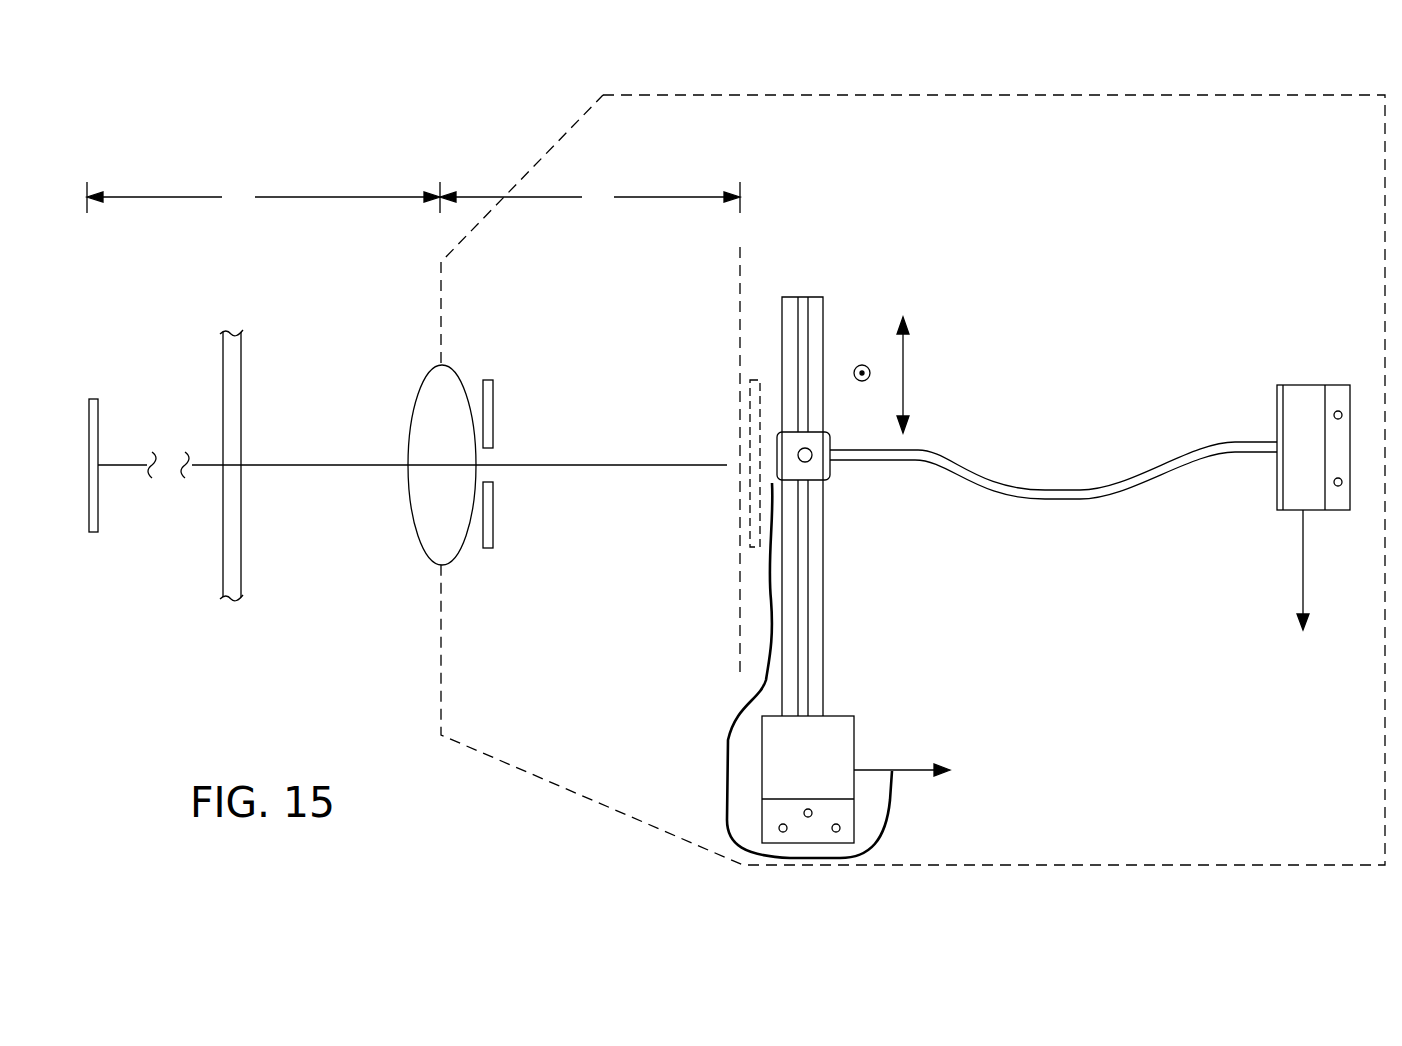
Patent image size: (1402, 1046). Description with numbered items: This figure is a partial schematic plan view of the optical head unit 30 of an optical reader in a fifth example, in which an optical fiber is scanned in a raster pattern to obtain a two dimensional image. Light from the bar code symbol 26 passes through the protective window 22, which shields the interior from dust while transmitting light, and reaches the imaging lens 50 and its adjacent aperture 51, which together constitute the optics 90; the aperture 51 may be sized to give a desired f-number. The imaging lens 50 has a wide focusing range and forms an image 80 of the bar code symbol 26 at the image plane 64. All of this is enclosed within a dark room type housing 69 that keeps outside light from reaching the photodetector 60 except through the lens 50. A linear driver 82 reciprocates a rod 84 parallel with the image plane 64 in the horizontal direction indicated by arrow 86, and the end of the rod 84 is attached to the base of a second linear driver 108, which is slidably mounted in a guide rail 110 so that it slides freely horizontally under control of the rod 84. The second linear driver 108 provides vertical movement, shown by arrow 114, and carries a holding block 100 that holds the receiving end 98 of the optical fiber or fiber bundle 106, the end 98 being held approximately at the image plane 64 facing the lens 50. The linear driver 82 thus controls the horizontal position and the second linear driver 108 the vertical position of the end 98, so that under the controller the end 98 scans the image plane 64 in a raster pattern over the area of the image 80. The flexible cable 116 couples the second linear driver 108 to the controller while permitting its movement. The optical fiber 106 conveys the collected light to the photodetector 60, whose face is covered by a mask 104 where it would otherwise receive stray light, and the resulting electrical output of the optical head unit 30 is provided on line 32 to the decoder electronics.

The protective window 22 is at (223, 365).
The bar code symbol 26 is at (98, 425).
The optical head unit 30 is at (316, 164).
The line 32 is at (1305, 556).
The imaging lens 50 is at (424, 378).
The aperture 51 is at (509, 426).
The photodetector 60 is at (1306, 395).
The image plane 64 is at (743, 605).
The dark room type housing 69 is at (638, 96).
The image 80 is at (745, 425).
The linear driver 82 is at (855, 734).
The rod 84 is at (815, 598).
The arrow 86 is at (906, 352).
The optics 90 is at (475, 578).
The receiving end 98 is at (765, 457).
The holding block 100 is at (812, 448).
The mask 104 is at (1272, 478).
The optical fiber 106 is at (1058, 488).
The second linear driver 108 is at (830, 478).
The guide rail 110 is at (822, 325).
The arrow 114 is at (862, 362).
The flexible cable 116 is at (725, 778).